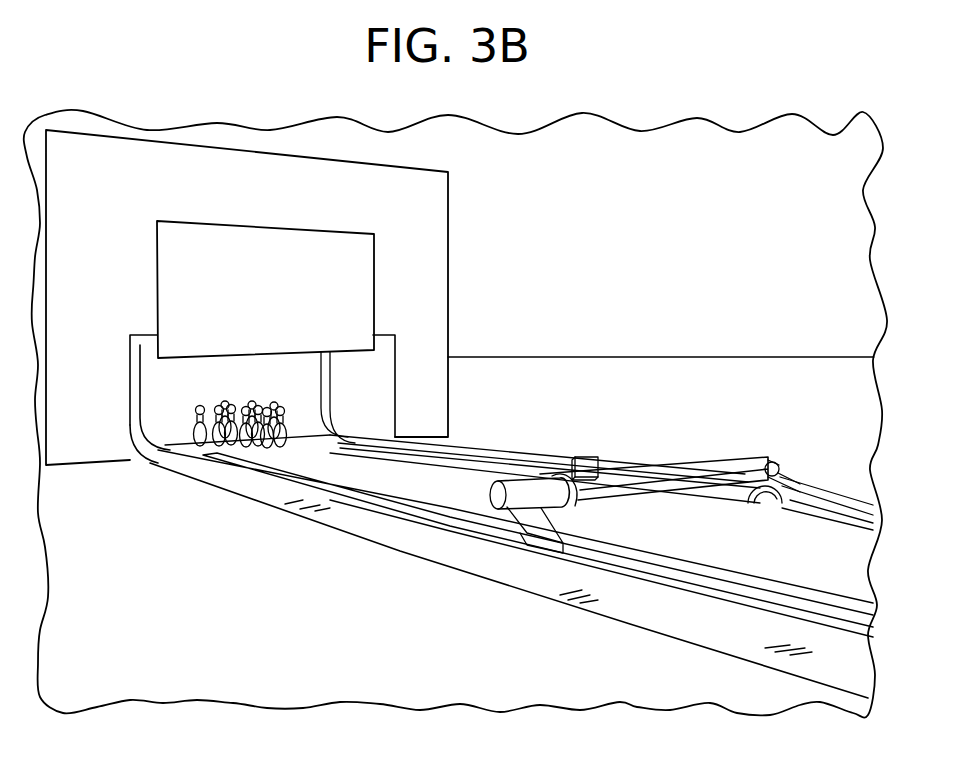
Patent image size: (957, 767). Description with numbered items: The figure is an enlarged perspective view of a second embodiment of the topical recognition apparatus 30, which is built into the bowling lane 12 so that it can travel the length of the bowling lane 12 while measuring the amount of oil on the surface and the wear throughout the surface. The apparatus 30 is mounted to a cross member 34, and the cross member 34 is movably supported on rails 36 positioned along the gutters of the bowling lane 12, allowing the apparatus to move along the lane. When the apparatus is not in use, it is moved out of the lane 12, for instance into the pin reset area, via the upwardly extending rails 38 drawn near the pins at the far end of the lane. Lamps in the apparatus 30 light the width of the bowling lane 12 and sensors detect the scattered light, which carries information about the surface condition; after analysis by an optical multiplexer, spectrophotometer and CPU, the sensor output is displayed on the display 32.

The bowling lane 12 is at (692, 543).
The topical recognition apparatus 30 is at (672, 470).
The display 32 is at (585, 456).
The cross member 34 is at (766, 463).
The rails 36 is at (813, 504).
The upwardly extending rails 38 is at (153, 463).